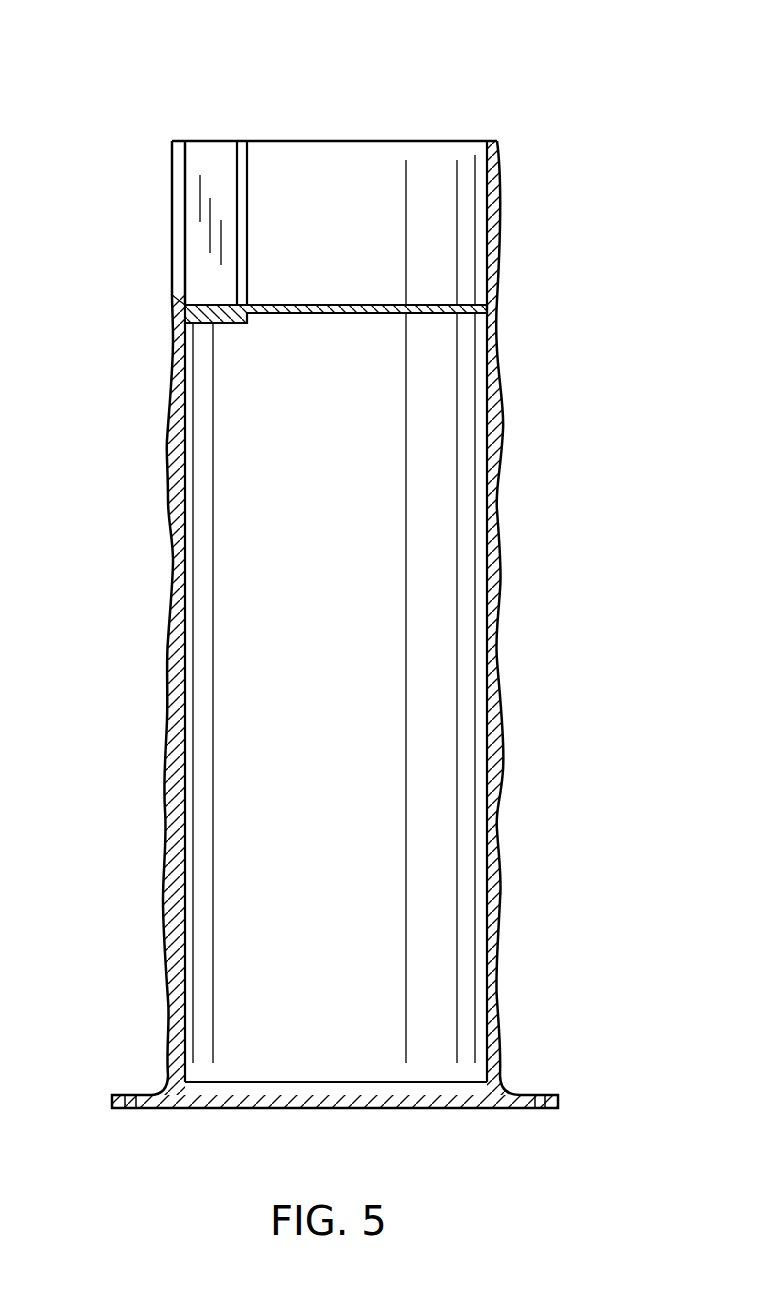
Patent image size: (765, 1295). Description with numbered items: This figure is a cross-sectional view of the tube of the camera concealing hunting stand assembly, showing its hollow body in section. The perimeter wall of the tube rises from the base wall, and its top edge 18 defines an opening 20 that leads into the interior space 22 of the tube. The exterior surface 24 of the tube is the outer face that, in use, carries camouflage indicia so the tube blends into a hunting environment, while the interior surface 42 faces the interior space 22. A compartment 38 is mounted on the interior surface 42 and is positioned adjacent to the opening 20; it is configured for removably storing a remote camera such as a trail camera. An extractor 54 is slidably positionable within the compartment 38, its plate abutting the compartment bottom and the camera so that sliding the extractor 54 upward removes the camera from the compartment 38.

The top edge 18 is at (495, 140).
The opening 20 is at (350, 130).
The interior space 22 is at (370, 785).
The exterior surface 24 is at (170, 600).
The compartment 38 is at (213, 180).
The interior surface 42 is at (185, 540).
The extractor 54 is at (336, 303).